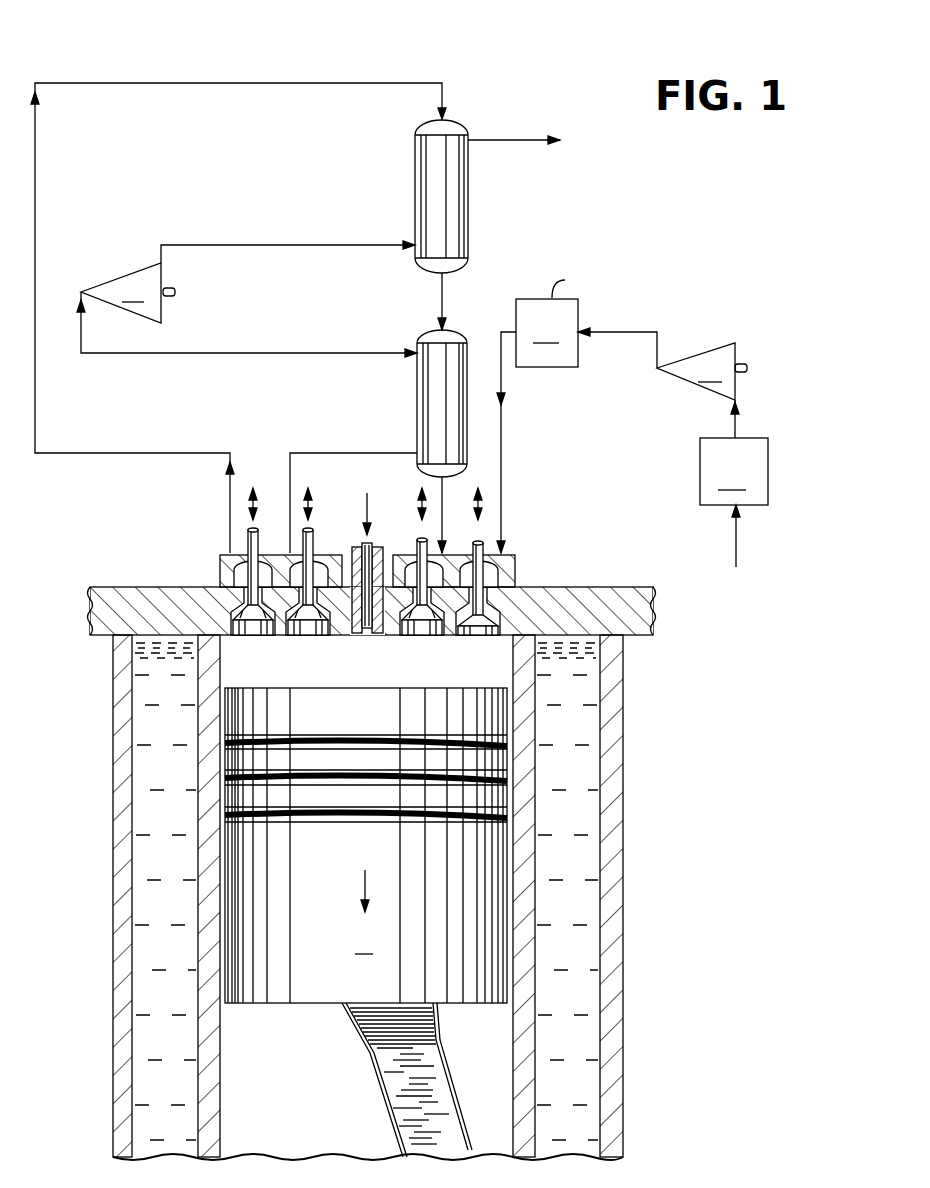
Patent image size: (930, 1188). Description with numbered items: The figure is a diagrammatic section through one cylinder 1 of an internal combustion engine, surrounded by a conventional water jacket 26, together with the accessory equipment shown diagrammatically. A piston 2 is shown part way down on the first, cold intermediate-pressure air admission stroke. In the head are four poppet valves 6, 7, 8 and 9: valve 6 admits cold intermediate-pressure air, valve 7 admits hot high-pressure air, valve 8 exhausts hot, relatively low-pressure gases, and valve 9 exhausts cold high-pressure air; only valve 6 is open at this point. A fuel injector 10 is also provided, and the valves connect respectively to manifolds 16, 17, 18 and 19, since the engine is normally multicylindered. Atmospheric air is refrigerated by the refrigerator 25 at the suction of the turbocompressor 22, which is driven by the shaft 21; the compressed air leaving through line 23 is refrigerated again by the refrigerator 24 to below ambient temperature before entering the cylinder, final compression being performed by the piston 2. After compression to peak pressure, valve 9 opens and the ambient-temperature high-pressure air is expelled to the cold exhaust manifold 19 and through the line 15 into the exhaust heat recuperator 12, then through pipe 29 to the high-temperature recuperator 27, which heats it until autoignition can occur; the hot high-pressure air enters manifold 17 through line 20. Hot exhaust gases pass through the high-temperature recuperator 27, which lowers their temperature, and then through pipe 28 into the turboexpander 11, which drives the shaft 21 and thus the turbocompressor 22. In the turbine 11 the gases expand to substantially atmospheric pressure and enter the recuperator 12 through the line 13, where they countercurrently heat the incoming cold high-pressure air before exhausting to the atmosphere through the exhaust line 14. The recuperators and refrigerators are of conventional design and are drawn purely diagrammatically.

The cylinder 1 is at (523, 1078).
The piston 2 is at (366, 845).
The poppet valve 6 is at (466, 634).
The poppet valve 7 is at (408, 633).
The exhaust valve 8 is at (318, 632).
The exhaust valve 9 is at (266, 632).
The fuel injector 10 is at (371, 545).
The turboexpander 11 is at (180, 302).
The exhaust heat recuperator 12 is at (468, 176).
The line 13 is at (255, 244).
The exhaust line 14 is at (532, 140).
The line 15 is at (232, 83).
The manifold 16 is at (468, 577).
The manifold 17 is at (404, 577).
The manifold 18 is at (325, 577).
The cold exhaust manifold 19 is at (266, 577).
The line 20 is at (446, 499).
The shaft 21 is at (174, 288).
The turbocompressor 22 is at (658, 390).
The line 23 is at (606, 332).
The refrigerator 24 is at (566, 407).
The refrigerator 25 is at (776, 521).
The water jacket 26 is at (580, 855).
The high-temperature recuperator 27 is at (436, 393).
The pipe 28 is at (292, 355).
The pipe 29 is at (443, 301).